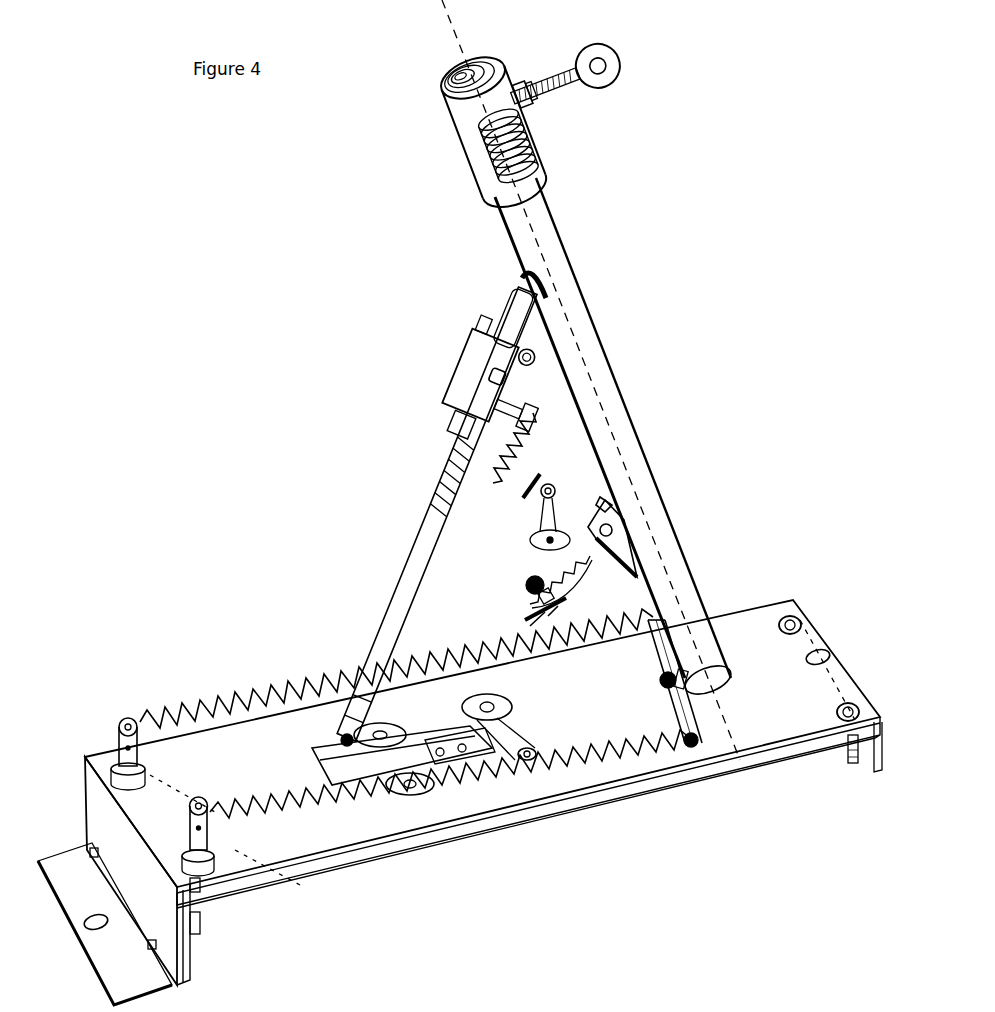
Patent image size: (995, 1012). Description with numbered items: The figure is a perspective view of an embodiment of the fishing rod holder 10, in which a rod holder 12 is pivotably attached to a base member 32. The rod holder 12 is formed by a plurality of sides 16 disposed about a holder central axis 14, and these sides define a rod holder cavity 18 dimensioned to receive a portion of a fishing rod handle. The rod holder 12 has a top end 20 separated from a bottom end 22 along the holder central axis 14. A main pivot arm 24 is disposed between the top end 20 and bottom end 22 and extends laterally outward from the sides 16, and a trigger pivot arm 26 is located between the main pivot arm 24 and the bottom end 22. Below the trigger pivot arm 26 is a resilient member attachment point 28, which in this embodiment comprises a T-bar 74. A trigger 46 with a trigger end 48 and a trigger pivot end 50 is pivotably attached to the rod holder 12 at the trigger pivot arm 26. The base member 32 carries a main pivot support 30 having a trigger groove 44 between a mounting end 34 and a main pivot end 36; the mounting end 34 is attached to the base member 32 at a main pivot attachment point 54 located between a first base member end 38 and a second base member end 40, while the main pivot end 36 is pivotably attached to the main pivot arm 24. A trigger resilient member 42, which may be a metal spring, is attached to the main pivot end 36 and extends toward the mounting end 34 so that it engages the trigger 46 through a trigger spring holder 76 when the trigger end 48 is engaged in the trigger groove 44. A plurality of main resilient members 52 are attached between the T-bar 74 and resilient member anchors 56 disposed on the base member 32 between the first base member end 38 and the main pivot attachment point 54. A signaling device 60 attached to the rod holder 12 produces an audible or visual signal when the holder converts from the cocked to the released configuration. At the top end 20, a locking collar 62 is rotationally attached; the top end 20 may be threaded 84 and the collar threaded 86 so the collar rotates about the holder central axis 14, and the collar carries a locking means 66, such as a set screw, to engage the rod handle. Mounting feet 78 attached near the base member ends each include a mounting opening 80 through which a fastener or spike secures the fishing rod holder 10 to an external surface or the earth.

The fishing rod holder 10 is at (675, 172).
The rod holder 12 is at (590, 307).
The holder central axis 14 is at (620, 447).
The sides 16 is at (517, 266).
The rod holder cavity 18 is at (552, 257).
The top end 20 is at (480, 215).
The bottom end 22 is at (727, 632).
The main pivot arm 24 is at (510, 312).
The trigger pivot arm 26 is at (633, 568).
The resilient member attachment point 28 is at (660, 681).
The main pivot support 30 is at (417, 567).
The base member 32 is at (388, 820).
The mounting end 34 is at (322, 728).
The main pivot end 36 is at (440, 418).
The first base member end 38 is at (160, 813).
The second base member end 40 is at (803, 637).
The trigger resilient member 42 is at (512, 468).
The trigger groove 44 is at (428, 512).
The trigger 46 is at (583, 573).
The trigger end 48 is at (522, 623).
The trigger pivot end 50 is at (598, 524).
The main resilient member 52 is at (253, 693).
The main pivot attachment point 54 is at (310, 752).
The resilient member anchor 56 is at (128, 720).
The signaling device 60 is at (540, 518).
The locking collar 62 is at (462, 150).
The locking means 66 is at (550, 100).
The T-bar 74 is at (672, 709).
The trigger spring holder 76 is at (523, 585).
The mounting feet 78 is at (195, 923).
The mounting opening 80 is at (830, 652).
The threads 84 is at (470, 181).
The threads 86 is at (528, 160).